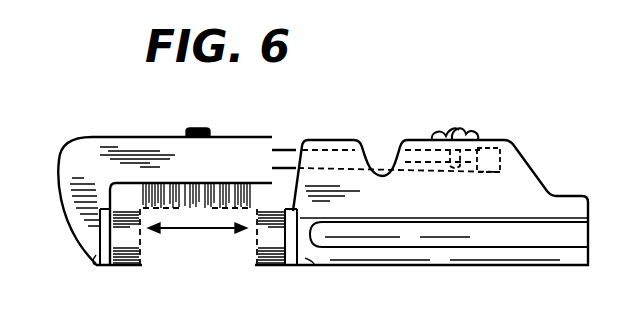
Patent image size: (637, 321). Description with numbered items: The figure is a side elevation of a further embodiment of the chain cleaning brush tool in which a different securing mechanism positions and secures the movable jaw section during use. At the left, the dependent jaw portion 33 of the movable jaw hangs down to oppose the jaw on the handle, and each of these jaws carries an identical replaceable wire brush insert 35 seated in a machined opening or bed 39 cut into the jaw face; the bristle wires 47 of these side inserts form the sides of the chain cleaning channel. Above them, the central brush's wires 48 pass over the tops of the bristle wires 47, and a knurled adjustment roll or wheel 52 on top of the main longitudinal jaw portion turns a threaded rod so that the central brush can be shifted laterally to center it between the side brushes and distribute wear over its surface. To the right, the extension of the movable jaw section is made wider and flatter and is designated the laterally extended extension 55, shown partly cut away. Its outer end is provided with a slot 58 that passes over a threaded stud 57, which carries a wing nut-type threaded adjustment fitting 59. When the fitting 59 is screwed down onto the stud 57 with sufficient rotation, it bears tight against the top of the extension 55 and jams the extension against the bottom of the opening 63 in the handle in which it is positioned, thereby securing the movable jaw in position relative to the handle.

The dependent jaw portion 33 is at (52, 198).
The replaceable wire brush insert 35 is at (88, 252).
The machined opening or bed 39 is at (105, 268).
The bristle wires of the brushes 47 is at (128, 267).
The wires of the replaceable brush insert 48 is at (184, 202).
The knurled adjustment roll or wheel 52 is at (208, 134).
The laterally extended extension 55 is at (283, 152).
The threaded stud 57 is at (455, 172).
The slot 58 is at (427, 140).
The wing nut-type threaded adjustment fitting 59 is at (478, 136).
The opening 63 is at (500, 160).